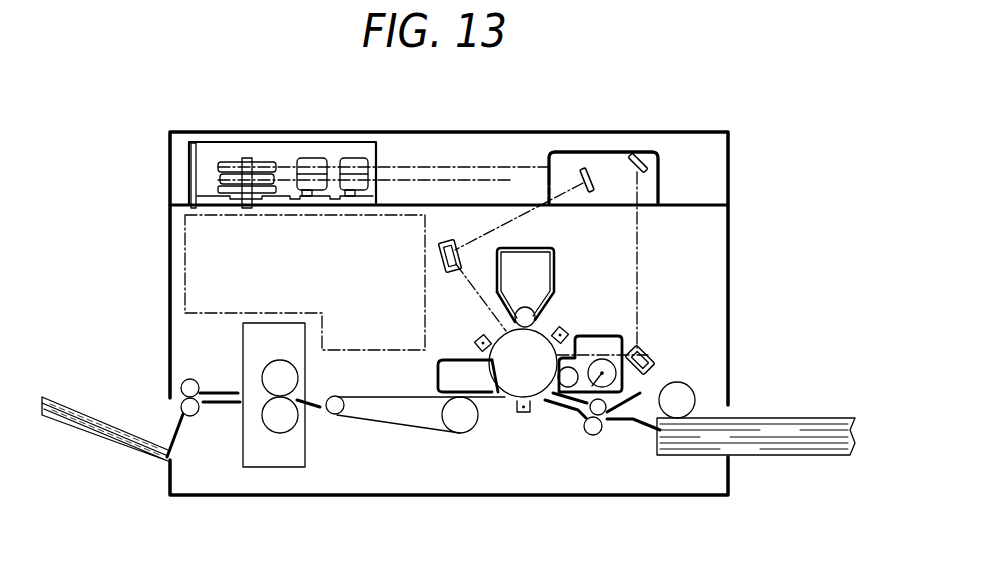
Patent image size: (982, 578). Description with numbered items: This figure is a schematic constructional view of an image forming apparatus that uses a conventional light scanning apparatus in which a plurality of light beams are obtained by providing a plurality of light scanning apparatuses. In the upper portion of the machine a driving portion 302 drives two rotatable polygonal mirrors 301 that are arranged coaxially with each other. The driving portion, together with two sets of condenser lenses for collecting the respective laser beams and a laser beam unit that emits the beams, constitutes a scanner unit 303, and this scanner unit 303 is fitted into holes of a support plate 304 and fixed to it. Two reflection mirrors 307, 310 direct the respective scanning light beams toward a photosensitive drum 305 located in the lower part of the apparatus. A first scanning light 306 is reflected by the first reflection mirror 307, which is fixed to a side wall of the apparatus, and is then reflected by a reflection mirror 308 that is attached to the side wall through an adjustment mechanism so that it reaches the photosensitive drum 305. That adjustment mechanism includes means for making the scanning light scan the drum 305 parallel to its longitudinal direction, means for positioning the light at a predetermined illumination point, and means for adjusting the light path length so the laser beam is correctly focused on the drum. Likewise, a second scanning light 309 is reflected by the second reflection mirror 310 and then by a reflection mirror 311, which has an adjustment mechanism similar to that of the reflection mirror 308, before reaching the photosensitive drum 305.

The rotatable polygonal mirrors 301 is at (218, 168).
The driving portion 302 is at (233, 195).
The scanner unit 303 is at (222, 141).
The support plate 304 is at (390, 203).
The photosensitive drum 305 is at (547, 406).
The first scanning light 306 is at (473, 167).
The first reflection mirror 307 is at (645, 151).
The reflection mirror 308 is at (653, 340).
The second scanning light 309 is at (515, 179).
The second reflection mirror 310 is at (588, 172).
The reflection mirror 311 is at (445, 242).